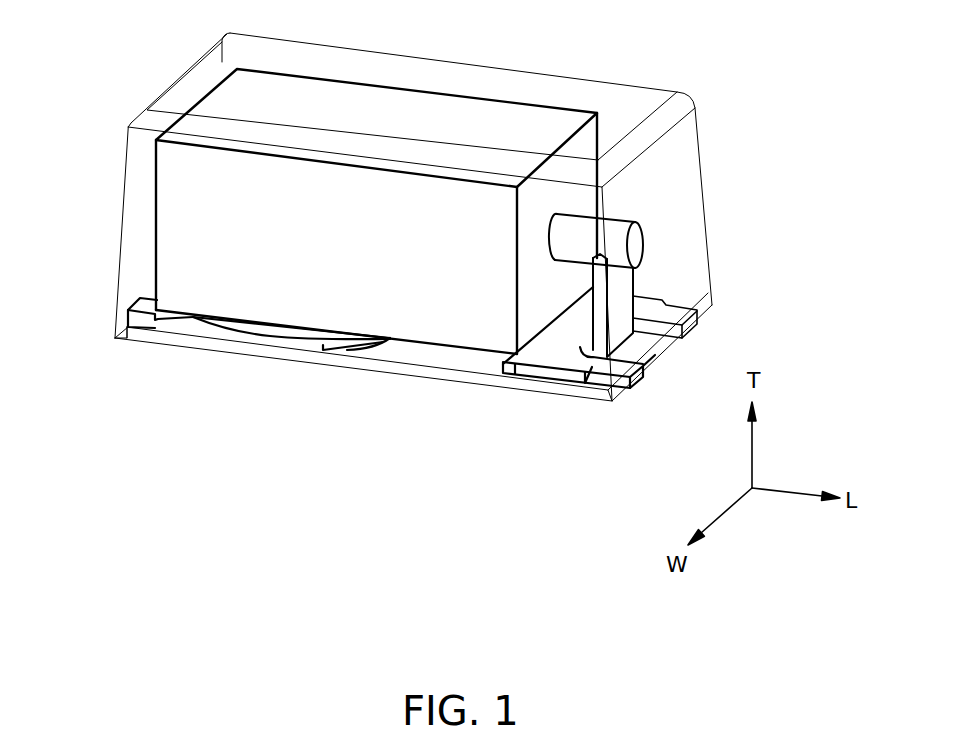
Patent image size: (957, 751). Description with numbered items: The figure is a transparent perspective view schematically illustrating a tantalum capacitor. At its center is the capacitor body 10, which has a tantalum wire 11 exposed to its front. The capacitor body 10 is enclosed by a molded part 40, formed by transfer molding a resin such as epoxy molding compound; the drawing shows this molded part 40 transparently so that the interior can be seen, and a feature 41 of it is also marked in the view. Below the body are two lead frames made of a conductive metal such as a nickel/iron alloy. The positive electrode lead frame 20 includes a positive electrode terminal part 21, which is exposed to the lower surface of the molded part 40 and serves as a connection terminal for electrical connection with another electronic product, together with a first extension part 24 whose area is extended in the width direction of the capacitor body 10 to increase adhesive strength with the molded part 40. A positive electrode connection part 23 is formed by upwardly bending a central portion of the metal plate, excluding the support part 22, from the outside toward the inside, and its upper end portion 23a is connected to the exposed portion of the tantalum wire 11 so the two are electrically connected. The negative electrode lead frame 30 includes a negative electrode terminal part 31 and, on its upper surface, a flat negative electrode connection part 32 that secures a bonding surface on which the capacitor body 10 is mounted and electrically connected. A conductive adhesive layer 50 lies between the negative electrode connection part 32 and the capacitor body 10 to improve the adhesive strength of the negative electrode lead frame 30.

The capacitor body 10 is at (435, 108).
The tantalum wire 11 is at (613, 228).
The positive electrode lead frame 20 is at (598, 382).
The positive electrode terminal part 21 is at (513, 366).
The support part 22 is at (682, 318).
The positive electrode connection part 23 is at (623, 283).
The upper end portion 23a is at (625, 257).
The first extension part 24 is at (560, 366).
The negative electrode lead frame 30 is at (147, 322).
The negative electrode terminal part 31 is at (127, 330).
The negative electrode connection part 32 is at (355, 345).
The molded part 40 is at (600, 80).
The cover lower edge 41 is at (191, 337).
The conductive adhesive layer 50 is at (270, 333).